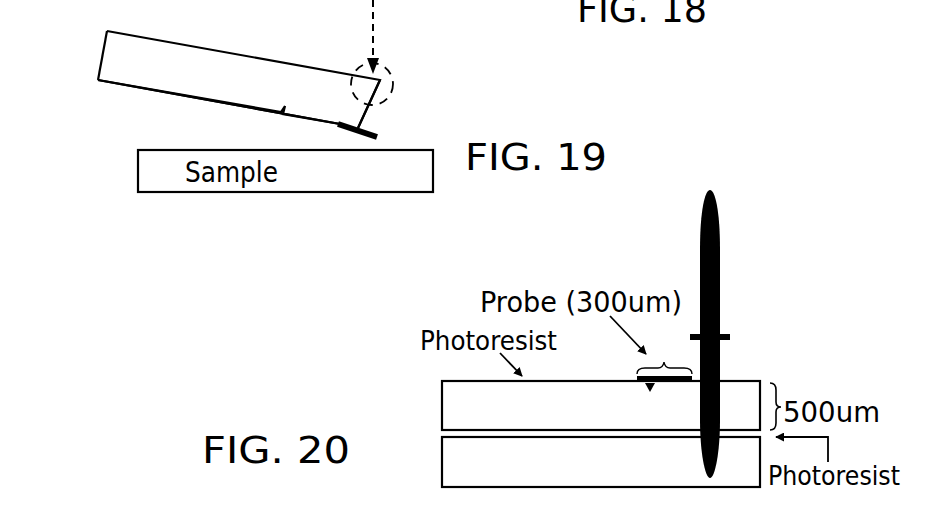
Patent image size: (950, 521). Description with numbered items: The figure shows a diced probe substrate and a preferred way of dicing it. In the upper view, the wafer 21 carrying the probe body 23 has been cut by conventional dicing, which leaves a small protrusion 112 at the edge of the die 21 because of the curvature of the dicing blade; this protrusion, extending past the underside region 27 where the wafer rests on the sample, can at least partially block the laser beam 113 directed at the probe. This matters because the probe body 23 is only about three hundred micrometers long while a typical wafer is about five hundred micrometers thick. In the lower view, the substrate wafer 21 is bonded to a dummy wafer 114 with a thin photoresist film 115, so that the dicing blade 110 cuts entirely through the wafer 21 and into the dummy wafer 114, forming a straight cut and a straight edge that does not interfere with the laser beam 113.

In FIG. 19, the wafer 21 is at (104, 49).
In FIG. 20, the wafer 21 is at (442, 402).
In FIG. 19, the probe body 23 is at (372, 132).
In FIG. 20, the probe body 23 is at (637, 378).
In FIG. 19, the wafer bottom surface 27 is at (370, 144).
In FIG. 19, the protrusion 112 is at (352, 71).
In FIG. 19, the laser beam 113 is at (373, 22).
In FIG. 20, the dicing blade 110 is at (727, 372).
In FIG. 20, the dummy wafer 114 is at (442, 462).
In FIG. 20, the photoresist film 115 is at (442, 432).